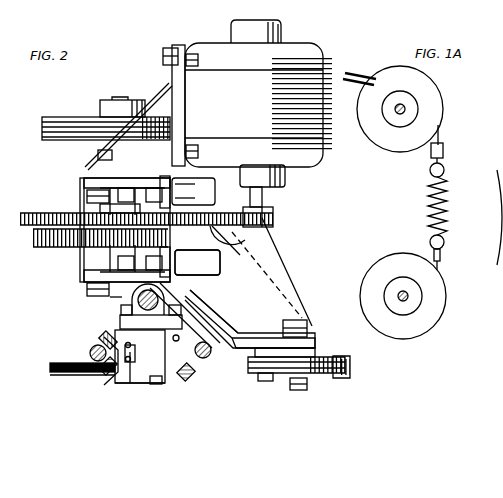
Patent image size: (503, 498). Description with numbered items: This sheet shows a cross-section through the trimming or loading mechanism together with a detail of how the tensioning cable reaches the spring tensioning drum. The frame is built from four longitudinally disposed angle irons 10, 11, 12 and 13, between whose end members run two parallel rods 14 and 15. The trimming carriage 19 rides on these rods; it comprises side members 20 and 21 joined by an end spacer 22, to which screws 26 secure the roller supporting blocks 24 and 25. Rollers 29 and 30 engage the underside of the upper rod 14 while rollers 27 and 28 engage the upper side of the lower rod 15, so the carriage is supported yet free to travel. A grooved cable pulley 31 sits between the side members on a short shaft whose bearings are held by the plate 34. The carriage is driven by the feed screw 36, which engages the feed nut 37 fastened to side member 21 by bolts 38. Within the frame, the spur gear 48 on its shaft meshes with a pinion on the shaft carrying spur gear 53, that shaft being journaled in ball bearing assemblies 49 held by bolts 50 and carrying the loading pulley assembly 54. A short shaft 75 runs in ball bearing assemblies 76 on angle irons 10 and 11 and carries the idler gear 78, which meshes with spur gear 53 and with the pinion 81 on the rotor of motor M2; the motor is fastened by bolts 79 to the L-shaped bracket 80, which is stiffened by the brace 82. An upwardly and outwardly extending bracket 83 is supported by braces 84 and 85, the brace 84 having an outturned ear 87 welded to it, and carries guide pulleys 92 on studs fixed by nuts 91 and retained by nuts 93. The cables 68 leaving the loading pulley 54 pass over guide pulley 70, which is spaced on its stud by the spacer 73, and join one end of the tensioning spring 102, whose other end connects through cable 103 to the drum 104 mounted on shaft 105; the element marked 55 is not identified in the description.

In FIG. 2, the motor M2 is at (328, 62).
In FIG. 2, the bolts 79 is at (200, 59).
In FIG. 2, the L-shaped bracket 80 is at (170, 48).
In FIG. 2, the brace 82 is at (161, 90).
In FIG. 2, the loading pulley assembly 54 is at (106, 110).
In FIG. 2, the angle iron 10 is at (140, 178).
In FIG. 2, the angle iron 12 is at (82, 182).
In FIG. 2, the angle iron 13 is at (82, 268).
In FIG. 2, the bolts 50 is at (86, 190).
In FIG. 2, the ball bearing assemblies 49 is at (98, 155).
In FIG. 2, the spur gear 53 is at (60, 214).
In FIG. 2, the spur gear 48 is at (33, 236).
In FIG. 2, the short shaft 75 is at (187, 192).
In FIG. 2, the ball bearing assemblies 76 is at (215, 190).
In FIG. 2, the angle iron 11 is at (197, 262).
In FIG. 2, the pinion 81 is at (274, 218).
In FIG. 2, the idler gear 78 is at (236, 230).
In FIG. 2, the brace 85 is at (262, 276).
In FIG. 2, the brace 84 is at (290, 282).
In FIG. 2, the bolts 38 is at (190, 300).
In FIG. 2, the side member 21 is at (200, 312).
In FIG. 2, the roller 29 is at (205, 322).
In FIG. 2, the outturned ear 87 is at (256, 348).
In FIG. 2, the nuts 91 is at (284, 330).
In FIG. 2, the bracket 83 is at (312, 356).
In FIG. 2, the guide pulleys 92 is at (345, 362).
In FIG. 2, the nuts 93 is at (290, 388).
In FIG. 2, the feed screw 36 is at (138, 302).
In FIG. 2, the feed nut 37 is at (125, 318).
In FIG. 2, the roller 27 is at (100, 343).
In FIG. 2, the rod 15 is at (90, 355).
In FIG. 2, the roller supporting block 24 is at (140, 356).
In FIG. 2, the screws 26 is at (141, 356).
In FIG. 2, the roller supporting block 25 is at (171, 335).
In FIG. 2, the rod 14 is at (210, 354).
In FIG. 2, the grooved cable pulley 31 is at (50, 368).
In FIG. 2, the roller 28 is at (115, 372).
In FIG. 2, the trimming carriage 19 is at (82, 386).
In FIG. 2, the side member 20 is at (125, 380).
In FIG. 2, the end spacer 22 is at (136, 385).
In FIG. 2, the plate 34 is at (158, 386).
In FIG. 2, the roller 30 is at (192, 378).
In FIG. 1A, the guide pulley 70 is at (425, 88).
In FIG. 1A, the spacer 73 is at (406, 109).
In FIG. 1A, the cable 68 is at (366, 74).
In FIG. 1A, the tensioning spring 102 is at (427, 198).
In FIG. 1A, the cable 103 is at (441, 257).
In FIG. 1A, the drum 104 is at (436, 290).
In FIG. 1A, the shaft 105 is at (408, 298).
In FIG. 1A, the belt 55 is at (499, 232).